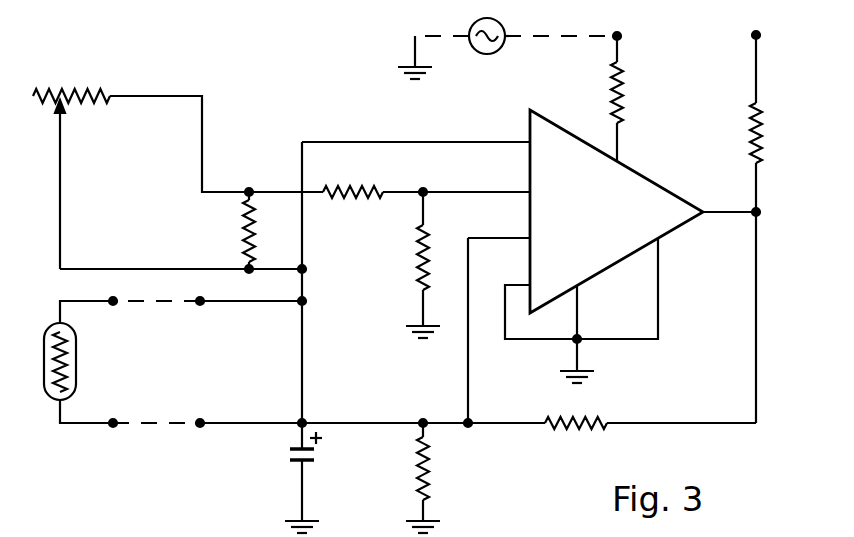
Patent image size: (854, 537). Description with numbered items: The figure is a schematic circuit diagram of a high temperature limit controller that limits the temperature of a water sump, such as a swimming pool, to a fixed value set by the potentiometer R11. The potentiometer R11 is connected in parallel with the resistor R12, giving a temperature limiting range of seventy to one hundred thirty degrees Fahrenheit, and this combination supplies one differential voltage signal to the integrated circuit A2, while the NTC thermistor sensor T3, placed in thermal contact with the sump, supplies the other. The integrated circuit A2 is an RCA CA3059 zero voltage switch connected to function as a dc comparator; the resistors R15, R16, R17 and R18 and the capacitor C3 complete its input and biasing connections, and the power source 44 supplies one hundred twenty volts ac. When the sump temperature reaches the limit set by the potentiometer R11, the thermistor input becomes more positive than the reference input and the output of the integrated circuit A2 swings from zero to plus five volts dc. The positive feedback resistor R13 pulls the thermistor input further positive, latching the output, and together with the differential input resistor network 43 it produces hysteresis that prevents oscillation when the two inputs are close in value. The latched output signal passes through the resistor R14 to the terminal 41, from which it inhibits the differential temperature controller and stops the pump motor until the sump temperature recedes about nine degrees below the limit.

The terminal 41 is at (756, 35).
The differential input resistor network 43 is at (279, 124).
The power source 44 is at (481, 53).
The potentiometer R11 is at (178, 166).
The resistor R12 is at (226, 230).
The positive feedback resistor R13 is at (650, 411).
The resistor R14 is at (783, 229).
The resistor R15 is at (426, 180).
The resistor R16 is at (406, 265).
The resistor R17 is at (444, 478).
The resistor R18 is at (643, 96).
The capacitor C3 is at (316, 482).
The NTC thermistor sensor T3 is at (175, 362).
The integrated circuit zero voltage switch A2 is at (614, 266).